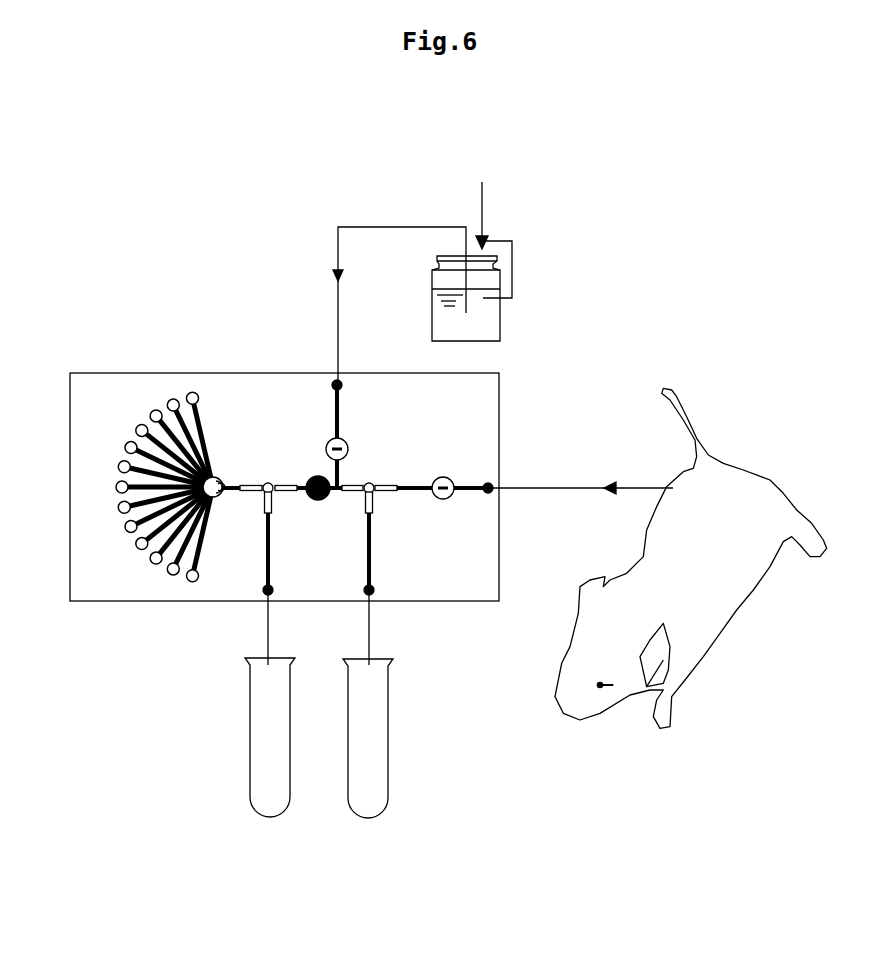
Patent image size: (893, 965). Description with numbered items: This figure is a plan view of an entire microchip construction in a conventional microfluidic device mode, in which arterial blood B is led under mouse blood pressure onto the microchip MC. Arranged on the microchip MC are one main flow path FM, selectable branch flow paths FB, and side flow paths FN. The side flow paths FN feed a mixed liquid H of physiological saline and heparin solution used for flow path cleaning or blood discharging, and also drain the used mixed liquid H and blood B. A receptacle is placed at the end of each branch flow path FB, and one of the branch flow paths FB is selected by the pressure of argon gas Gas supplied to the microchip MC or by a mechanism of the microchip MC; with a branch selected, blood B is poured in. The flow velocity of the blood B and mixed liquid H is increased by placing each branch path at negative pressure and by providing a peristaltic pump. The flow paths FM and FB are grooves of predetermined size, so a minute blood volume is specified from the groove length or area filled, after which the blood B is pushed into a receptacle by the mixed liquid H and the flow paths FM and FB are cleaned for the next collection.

The microchip MC is at (133, 618).
The branch flow paths FB is at (204, 420).
The main flow path FM is at (413, 480).
The side flow paths FN is at (327, 415).
The mixed liquid of physiological saline and heparin solution H is at (338, 307).
The blood B is at (535, 487).
The argon gas Gas is at (487, 228).